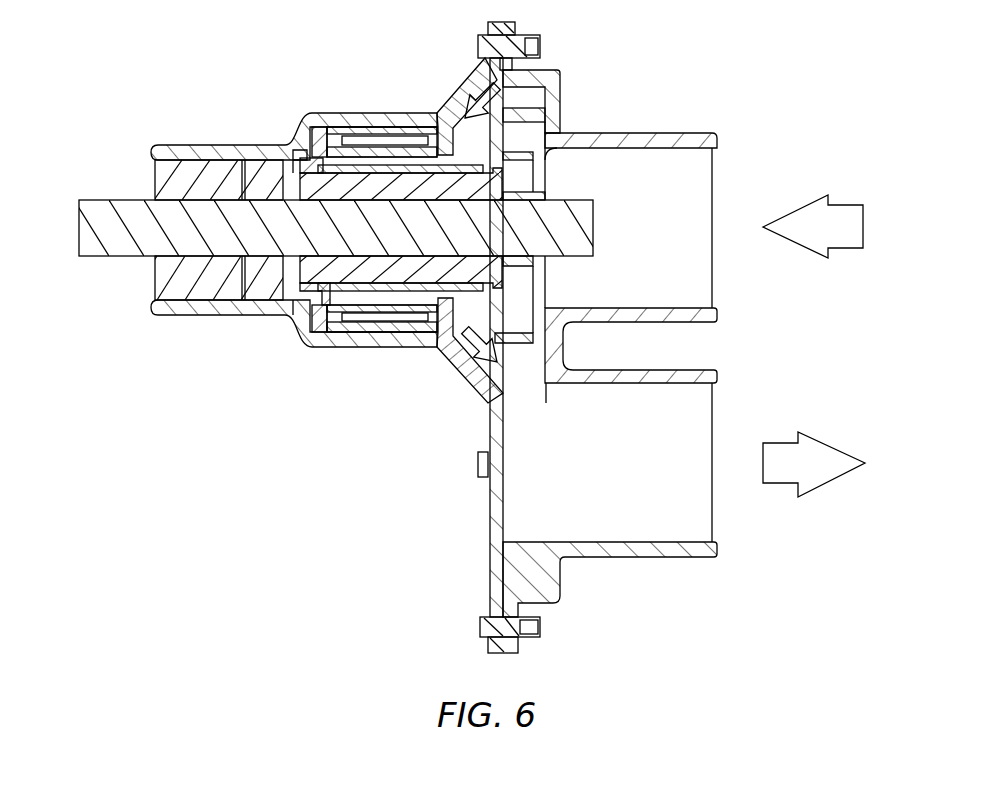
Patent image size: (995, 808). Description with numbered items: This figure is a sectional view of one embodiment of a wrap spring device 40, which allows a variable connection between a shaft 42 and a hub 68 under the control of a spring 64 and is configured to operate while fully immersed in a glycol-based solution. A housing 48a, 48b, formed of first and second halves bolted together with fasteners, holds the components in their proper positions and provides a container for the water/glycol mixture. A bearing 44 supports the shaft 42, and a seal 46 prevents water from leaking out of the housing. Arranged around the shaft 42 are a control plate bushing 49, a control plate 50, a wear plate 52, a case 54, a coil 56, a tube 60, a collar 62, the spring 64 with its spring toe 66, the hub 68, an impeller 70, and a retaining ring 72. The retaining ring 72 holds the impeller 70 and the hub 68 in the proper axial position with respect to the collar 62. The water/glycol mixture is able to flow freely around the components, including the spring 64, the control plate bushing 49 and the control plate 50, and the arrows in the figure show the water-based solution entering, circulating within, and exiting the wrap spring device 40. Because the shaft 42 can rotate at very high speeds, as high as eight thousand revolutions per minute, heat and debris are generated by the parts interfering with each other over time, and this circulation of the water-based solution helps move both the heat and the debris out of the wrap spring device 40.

The wrap spring device 40 is at (782, 385).
The shaft 42 is at (115, 243).
The bearing 44 is at (188, 172).
The seal 46 is at (263, 285).
The first half of housing 48a is at (495, 527).
The second half of housing 48b is at (668, 235).
The control plate bushing 49 is at (295, 148).
The control plate 50 is at (312, 170).
The wear plate 52 is at (333, 323).
The case 54 is at (348, 130).
The coil 56 is at (365, 313).
The tube 60 is at (390, 157).
The collar 62 is at (423, 275).
The spring 64 is at (453, 163).
The spring toe 66 is at (315, 163).
The hub 68 is at (460, 265).
The impeller 70 is at (513, 107).
The retaining ring 72 is at (550, 192).